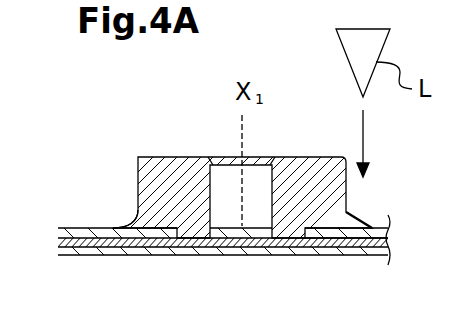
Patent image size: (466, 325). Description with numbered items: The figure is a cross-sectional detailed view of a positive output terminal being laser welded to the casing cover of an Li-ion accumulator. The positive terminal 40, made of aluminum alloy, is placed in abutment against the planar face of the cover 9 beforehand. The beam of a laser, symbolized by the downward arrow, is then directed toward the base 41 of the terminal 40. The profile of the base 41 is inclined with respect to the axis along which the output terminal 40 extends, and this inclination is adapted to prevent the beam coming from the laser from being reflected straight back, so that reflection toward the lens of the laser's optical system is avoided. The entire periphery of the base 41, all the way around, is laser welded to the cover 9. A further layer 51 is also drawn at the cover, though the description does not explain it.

The cover 9 is at (87, 228).
The positive terminal 40 is at (173, 157).
The base 41 is at (127, 215).
The adhesive layer 51 is at (343, 231).